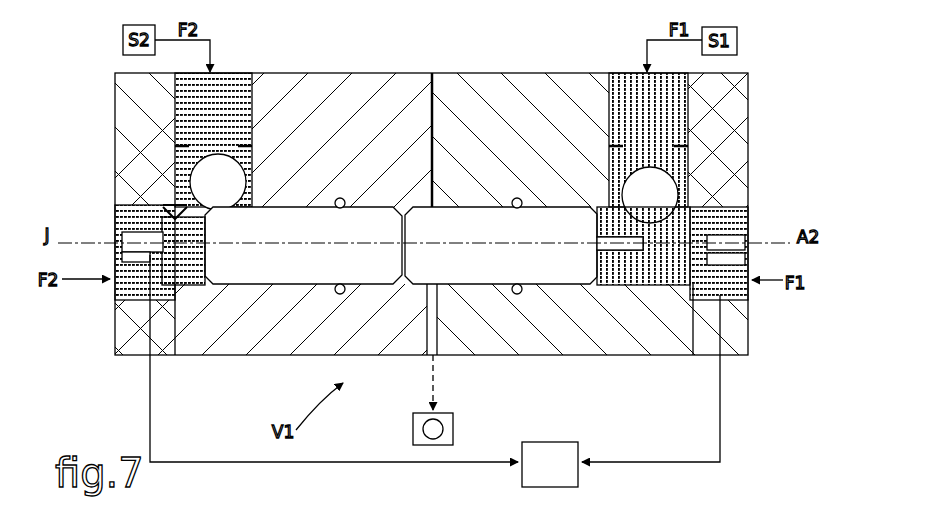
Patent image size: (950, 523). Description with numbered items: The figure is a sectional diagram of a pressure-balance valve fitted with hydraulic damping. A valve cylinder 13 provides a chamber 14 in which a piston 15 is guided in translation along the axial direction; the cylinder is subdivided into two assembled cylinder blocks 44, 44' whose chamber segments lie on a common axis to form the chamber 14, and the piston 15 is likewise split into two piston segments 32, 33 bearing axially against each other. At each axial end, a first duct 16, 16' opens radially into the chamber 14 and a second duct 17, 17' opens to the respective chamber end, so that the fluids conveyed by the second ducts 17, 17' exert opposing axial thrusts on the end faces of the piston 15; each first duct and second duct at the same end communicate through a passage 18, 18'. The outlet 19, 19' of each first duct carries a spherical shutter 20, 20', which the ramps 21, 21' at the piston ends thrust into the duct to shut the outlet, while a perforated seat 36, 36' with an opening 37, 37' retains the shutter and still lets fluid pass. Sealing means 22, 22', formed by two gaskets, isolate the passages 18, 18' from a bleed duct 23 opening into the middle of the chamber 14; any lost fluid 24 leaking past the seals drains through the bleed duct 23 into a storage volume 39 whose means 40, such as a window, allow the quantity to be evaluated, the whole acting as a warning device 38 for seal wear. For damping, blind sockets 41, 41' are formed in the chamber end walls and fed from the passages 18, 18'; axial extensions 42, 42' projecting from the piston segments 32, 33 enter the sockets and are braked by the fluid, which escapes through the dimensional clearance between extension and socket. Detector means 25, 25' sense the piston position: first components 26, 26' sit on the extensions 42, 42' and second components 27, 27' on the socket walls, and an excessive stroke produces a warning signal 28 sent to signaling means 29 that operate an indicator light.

The valve cylinder 13 is at (528, 73).
The chamber 14 is at (603, 285).
The piston 15 is at (292, 300).
The first duct 16 is at (282, 54).
The first duct 16' is at (590, 53).
The second duct 17 is at (137, 343).
The second duct 17' is at (741, 319).
The passage 18 is at (180, 363).
The passage 18' is at (702, 341).
The outlet 19 is at (138, 186).
The outlet 19' is at (697, 190).
The shutter 20 is at (218, 182).
The shutter 20' is at (650, 195).
The ramp 21 is at (265, 226).
The ramp 21' is at (532, 226).
The sealing means 22 is at (316, 213).
The sealing means 22' is at (507, 213).
The bleed duct 23 is at (468, 322).
The lost fluid 24 is at (418, 382).
The detector means 25 is at (113, 179).
The detector means 25' is at (749, 184).
The first component 26 is at (235, 256).
The first component 26' is at (642, 344).
The second component 27 is at (116, 287).
The second component 27' is at (756, 254).
The warning signal 28 is at (435, 358).
The signaling means 29 is at (550, 464).
The piston segment 32 is at (303, 245).
The piston segment 33 is at (524, 245).
The perforated seat 36 is at (164, 122).
The perforated seat 36' is at (648, 118).
The opening 37 is at (262, 107).
The opening 37' is at (702, 110).
The warning device 38 is at (460, 417).
The storage volume 39 is at (413, 429).
The means for evaluating the quantity of lost fluid 40 is at (436, 447).
The blind socket 41 is at (110, 237).
The blind socket 41' is at (745, 238).
The axial extension 42 is at (222, 368).
The axial extension 42' is at (580, 178).
The pressure-balance valve cylinder block 44 is at (393, 113).
The pressure-balance valve cylinder block 44' is at (458, 187).